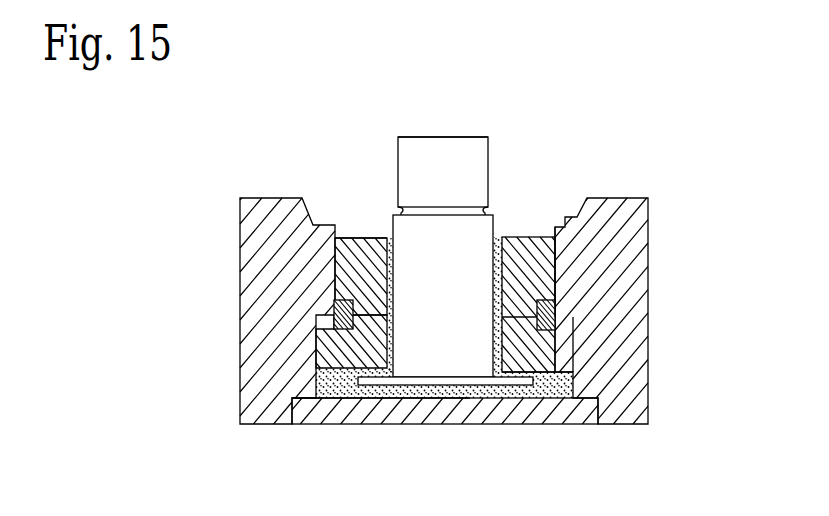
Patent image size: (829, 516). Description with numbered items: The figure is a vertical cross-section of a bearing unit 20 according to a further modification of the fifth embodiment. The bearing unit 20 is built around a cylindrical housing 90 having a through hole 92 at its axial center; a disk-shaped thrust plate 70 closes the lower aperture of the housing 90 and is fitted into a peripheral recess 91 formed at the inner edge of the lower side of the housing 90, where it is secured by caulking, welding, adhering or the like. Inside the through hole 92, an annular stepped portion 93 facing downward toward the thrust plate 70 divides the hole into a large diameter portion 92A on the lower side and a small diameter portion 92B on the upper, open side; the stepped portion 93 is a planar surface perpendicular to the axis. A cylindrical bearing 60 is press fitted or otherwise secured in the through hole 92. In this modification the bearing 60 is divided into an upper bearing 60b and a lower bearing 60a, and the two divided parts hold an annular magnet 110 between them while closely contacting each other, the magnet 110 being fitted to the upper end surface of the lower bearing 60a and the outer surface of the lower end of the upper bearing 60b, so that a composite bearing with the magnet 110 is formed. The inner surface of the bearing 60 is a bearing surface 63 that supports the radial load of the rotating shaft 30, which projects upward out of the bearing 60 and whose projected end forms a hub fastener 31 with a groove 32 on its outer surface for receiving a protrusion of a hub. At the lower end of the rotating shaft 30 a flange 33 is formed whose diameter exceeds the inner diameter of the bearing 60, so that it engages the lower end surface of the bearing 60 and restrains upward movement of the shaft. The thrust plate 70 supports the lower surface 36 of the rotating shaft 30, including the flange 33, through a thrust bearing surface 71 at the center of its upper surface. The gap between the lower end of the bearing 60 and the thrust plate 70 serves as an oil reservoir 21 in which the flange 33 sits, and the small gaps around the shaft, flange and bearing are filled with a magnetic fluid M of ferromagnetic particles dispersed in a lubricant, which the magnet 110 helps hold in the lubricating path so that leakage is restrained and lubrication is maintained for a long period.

The bearing unit 20 is at (226, 266).
The oil reservoir 21 is at (350, 393).
The rotating shaft 30 is at (467, 131).
The hub fastener 31 is at (398, 166).
The groove 32 is at (487, 207).
The flange 33 is at (377, 398).
The lower surface of the rotating shaft 36 is at (432, 398).
The bearing 60 is at (522, 232).
The lower bearing 60a is at (550, 373).
The upper bearing 60b is at (362, 238).
The bearing surface 63 is at (388, 290).
The thrust plate 70 is at (483, 425).
The thrust bearing surface 71 is at (412, 377).
The housing 90 is at (648, 263).
The peripheral recess 91 is at (297, 400).
The through hole 92 is at (346, 247).
The large diameter portion 92A is at (573, 357).
The small diameter portion 92B is at (553, 247).
The stepped portion 93 is at (322, 328).
The magnet 110 is at (555, 305).
The magnetic fluid M is at (542, 387).